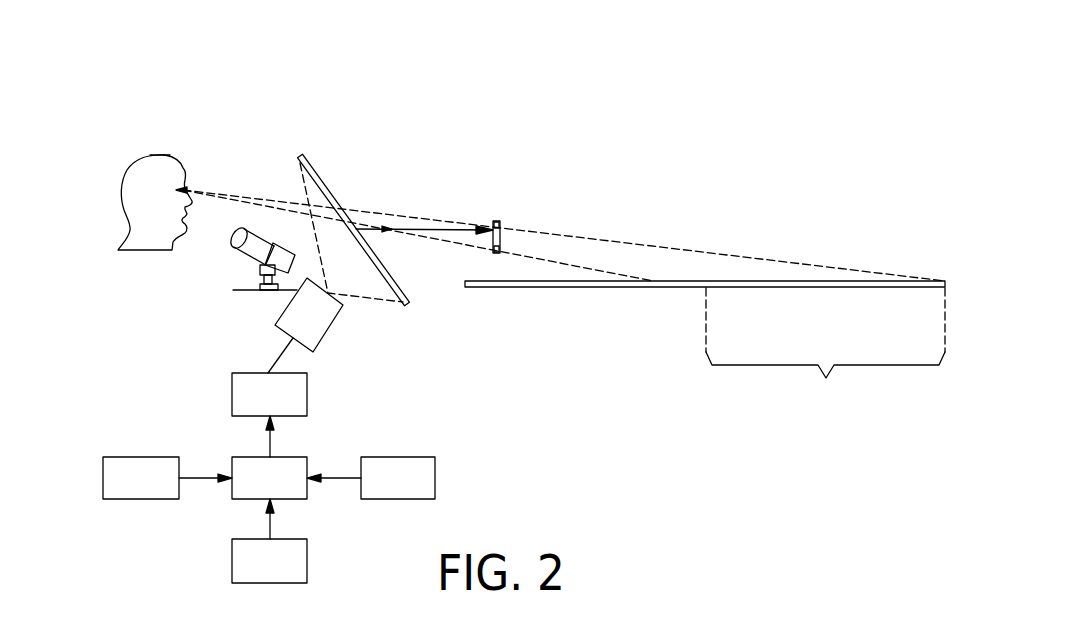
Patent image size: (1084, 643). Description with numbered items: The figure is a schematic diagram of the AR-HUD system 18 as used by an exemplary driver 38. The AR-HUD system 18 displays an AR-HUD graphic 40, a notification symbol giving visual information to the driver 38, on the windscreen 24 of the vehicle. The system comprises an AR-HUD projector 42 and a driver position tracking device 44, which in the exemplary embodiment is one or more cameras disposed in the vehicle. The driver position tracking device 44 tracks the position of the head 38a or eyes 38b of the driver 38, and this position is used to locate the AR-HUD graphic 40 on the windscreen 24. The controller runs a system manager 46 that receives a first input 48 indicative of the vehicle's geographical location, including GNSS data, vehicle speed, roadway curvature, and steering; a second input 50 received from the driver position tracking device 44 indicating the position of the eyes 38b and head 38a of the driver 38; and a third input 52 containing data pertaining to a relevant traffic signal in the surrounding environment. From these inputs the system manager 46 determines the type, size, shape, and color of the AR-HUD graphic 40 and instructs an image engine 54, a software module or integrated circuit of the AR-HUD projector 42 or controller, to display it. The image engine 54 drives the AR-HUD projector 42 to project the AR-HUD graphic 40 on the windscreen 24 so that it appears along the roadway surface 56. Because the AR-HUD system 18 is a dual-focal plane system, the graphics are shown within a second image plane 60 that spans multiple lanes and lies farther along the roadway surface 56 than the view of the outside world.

The AR-HUD system 18 is at (255, 75).
The driver 38 is at (105, 143).
The head 38a is at (158, 155).
The eyes 38b is at (184, 187).
The windscreen 24 is at (315, 170).
The AR-HUD graphic 40 is at (496, 221).
The driver position tracking device 44 is at (260, 275).
The AR-HUD projector 42 is at (323, 328).
The image engine 54 is at (283, 407).
The system manager 46 is at (283, 491).
The first input 48 is at (283, 573).
The third input 52 is at (154, 491).
The second input 50 is at (412, 491).
The roadway surface 56 is at (577, 288).
The second image plane 60 is at (825, 347).